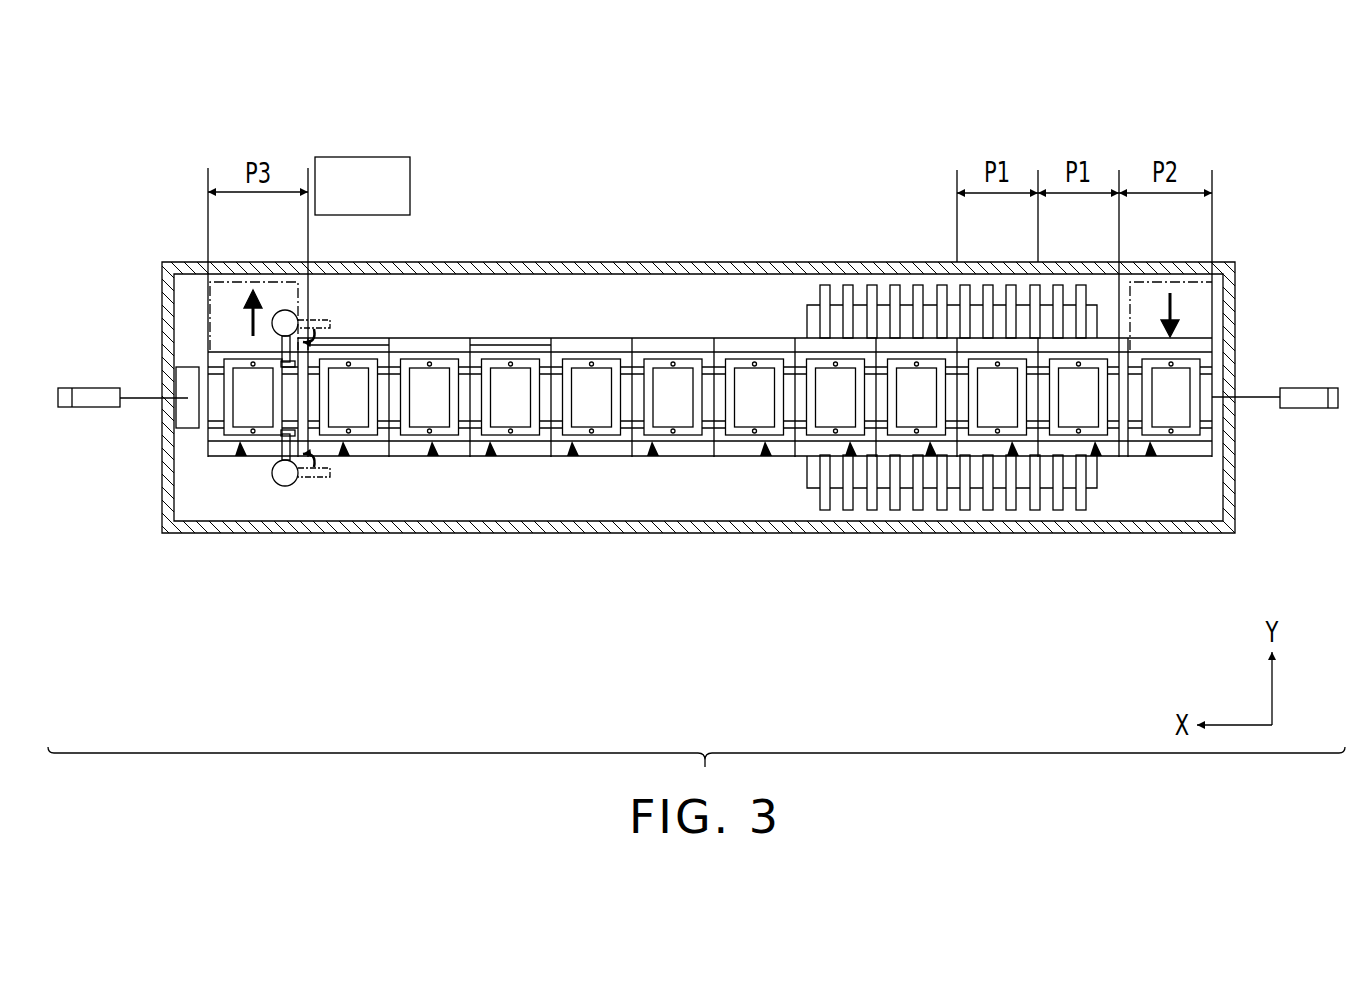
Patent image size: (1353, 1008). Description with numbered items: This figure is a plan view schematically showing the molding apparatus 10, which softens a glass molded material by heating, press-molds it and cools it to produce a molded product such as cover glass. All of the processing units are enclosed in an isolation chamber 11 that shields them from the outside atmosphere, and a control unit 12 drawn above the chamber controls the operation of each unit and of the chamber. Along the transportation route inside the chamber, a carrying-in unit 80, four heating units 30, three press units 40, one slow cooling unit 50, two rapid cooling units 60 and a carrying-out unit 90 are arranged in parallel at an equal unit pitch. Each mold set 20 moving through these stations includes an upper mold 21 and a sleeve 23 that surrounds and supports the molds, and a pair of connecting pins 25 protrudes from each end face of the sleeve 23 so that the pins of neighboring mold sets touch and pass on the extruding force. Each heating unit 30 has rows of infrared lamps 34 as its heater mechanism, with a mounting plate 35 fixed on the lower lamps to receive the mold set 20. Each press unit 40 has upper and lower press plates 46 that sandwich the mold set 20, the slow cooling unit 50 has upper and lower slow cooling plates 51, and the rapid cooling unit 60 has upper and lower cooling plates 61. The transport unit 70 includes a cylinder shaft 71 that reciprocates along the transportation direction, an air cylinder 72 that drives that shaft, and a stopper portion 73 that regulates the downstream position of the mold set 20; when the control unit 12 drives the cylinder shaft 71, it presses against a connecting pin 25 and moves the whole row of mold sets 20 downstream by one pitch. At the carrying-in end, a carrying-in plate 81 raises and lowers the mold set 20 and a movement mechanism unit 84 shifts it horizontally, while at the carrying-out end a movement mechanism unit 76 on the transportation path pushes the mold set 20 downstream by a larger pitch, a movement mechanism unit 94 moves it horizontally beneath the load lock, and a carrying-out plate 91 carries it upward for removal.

The molding apparatus 10 is at (1248, 181).
The isolation chamber 11 is at (935, 262).
The control unit 12 is at (378, 157).
The mold set 20 is at (612, 365).
The upper mold 21 is at (345, 370).
The sleeve 23 is at (343, 360).
The connecting pin 25 is at (1135, 372).
The heating unit 30 is at (850, 440).
The infrared lamp 34 is at (853, 298).
The mounting plate 35 is at (815, 440).
The press unit 40 is at (572, 441).
The press plate 46 is at (591, 352).
The slow cooling unit 50 is at (490, 441).
The slow cooling plate 51 is at (527, 352).
The rapid cooling unit 60 is at (422, 352).
The cooling plate 61 is at (370, 352).
The transport unit 70 is at (1318, 388).
The cylinder shaft 71 is at (1258, 395).
The air cylinder 72 is at (1318, 408).
The stopper portion 73 is at (90, 408).
The movement mechanism unit 76 is at (287, 486).
The carrying-in unit 80 is at (1150, 441).
The carrying-in plate 81 is at (1212, 437).
The movement mechanism unit 84 is at (1170, 282).
The carrying-out unit 90 is at (243, 441).
The carrying-out plate 91 is at (197, 437).
The movement mechanism unit 94 is at (243, 282).